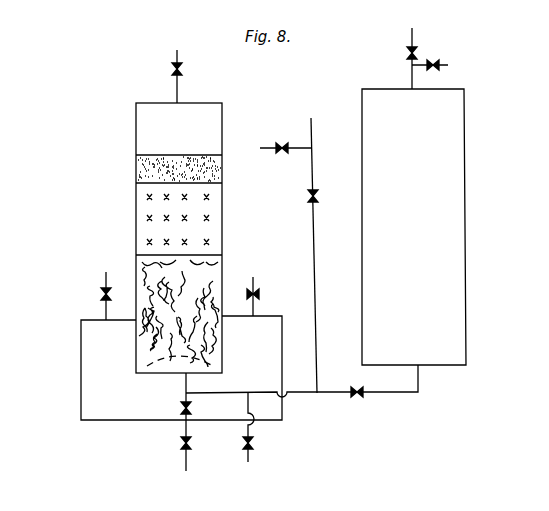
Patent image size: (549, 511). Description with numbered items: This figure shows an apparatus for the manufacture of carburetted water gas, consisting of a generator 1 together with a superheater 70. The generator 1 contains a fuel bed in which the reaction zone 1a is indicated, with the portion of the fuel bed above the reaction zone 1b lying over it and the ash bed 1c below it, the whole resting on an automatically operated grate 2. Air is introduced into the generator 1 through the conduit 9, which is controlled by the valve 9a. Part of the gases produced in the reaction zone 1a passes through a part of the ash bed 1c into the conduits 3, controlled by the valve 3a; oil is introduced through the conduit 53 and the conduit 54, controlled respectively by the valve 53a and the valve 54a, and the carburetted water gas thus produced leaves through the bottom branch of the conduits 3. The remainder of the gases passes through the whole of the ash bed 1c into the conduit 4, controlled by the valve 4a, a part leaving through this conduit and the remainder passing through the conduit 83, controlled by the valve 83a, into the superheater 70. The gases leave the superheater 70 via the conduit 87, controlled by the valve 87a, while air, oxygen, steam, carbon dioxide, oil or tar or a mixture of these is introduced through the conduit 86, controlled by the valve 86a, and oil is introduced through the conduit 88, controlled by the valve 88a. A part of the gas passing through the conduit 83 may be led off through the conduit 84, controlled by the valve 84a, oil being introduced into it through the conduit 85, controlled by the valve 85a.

The generator 1 is at (222, 116).
The reaction zone 1a is at (216, 213).
The portion of the fuel bed above the reaction zone 1b is at (222, 165).
The ash bed 1c is at (210, 267).
The automatically operated grate 2 is at (200, 356).
The conduits 3 is at (81, 376).
The valve 3a is at (190, 446).
The conduit 4 is at (186, 383).
The valve 4a is at (183, 405).
The conduit 9 is at (177, 85).
The valve 9a is at (182, 72).
The conduit 53 is at (106, 308).
The valve 53a is at (103, 291).
The conduit 54 is at (258, 297).
The valve 54a is at (256, 292).
The superheater 70 is at (465, 213).
The conduit 83 is at (323, 392).
The valve 83a is at (360, 394).
The conduit 84 is at (314, 226).
The valve 84a is at (316, 190).
The conduit 85 is at (302, 147).
The valve 85a is at (281, 153).
The conduit 86 is at (250, 461).
The valve 86a is at (254, 443).
The conduit 87 is at (412, 71).
The valve 87a is at (411, 46).
The conduit 88 is at (448, 63).
The valve 88a is at (434, 60).